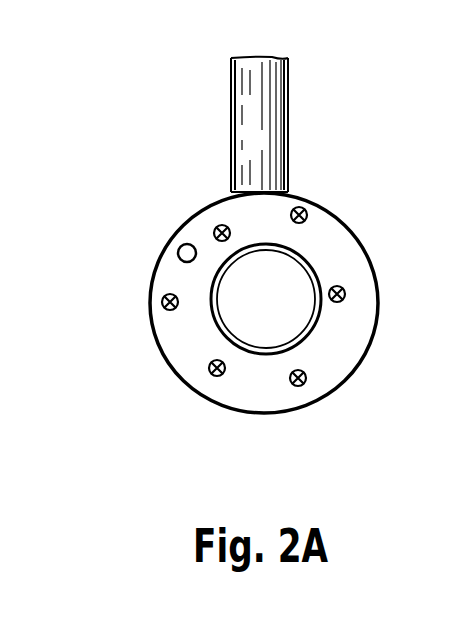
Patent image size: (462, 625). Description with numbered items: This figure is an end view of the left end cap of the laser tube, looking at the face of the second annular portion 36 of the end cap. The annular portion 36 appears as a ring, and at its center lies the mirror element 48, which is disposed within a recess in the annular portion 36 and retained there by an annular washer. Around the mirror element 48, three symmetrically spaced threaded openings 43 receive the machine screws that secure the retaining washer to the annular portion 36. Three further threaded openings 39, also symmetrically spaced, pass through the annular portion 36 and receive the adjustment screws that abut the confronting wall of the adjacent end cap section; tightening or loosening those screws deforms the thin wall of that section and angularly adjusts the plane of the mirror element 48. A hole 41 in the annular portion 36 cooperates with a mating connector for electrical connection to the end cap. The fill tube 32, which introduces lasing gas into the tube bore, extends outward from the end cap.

The fill tube 32 is at (288, 103).
The second annular portion 36 is at (246, 414).
The threaded openings 39 is at (304, 208).
The hole 41 is at (178, 250).
The threaded openings 43 is at (221, 226).
The mirror element 48 is at (216, 329).